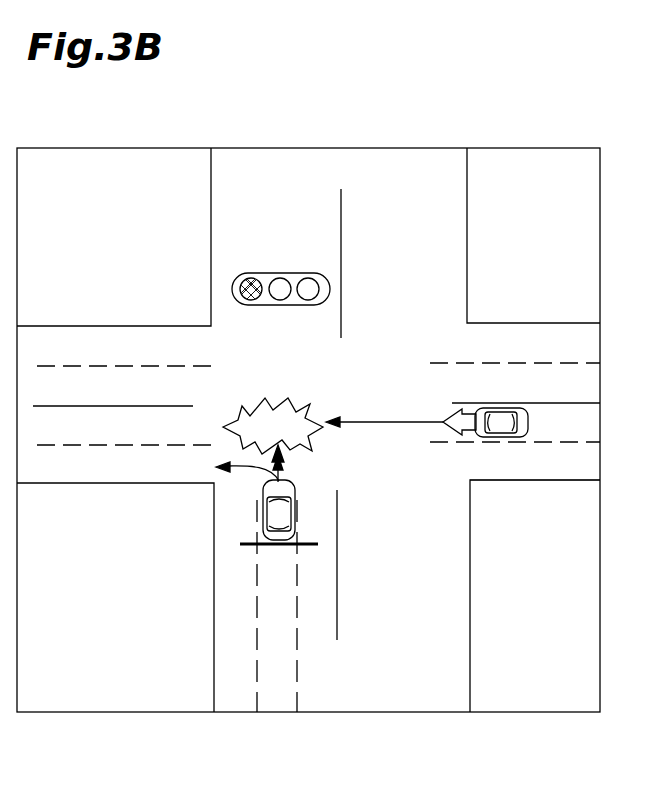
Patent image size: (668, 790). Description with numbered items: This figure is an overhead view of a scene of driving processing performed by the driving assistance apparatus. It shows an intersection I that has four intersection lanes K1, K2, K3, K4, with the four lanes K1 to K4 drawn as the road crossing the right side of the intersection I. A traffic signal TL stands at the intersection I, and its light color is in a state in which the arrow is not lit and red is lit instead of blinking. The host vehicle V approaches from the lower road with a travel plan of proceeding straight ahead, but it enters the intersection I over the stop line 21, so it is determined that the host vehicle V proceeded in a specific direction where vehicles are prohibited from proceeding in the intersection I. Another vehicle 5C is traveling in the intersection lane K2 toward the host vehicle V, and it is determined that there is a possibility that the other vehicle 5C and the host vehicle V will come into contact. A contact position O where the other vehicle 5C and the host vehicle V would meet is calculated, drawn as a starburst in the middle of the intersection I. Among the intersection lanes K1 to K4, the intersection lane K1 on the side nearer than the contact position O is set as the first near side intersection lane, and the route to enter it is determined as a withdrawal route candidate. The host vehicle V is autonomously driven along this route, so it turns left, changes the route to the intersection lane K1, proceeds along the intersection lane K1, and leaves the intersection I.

The intersection I is at (188, 279).
The traffic signal TL is at (330, 272).
The contact position O is at (255, 420).
The host vehicle V is at (270, 518).
The stop line 21 is at (248, 548).
The other vehicle 5C is at (504, 438).
The intersection lane K1 is at (590, 464).
The intersection lane K2 is at (590, 424).
The intersection lane K3 is at (590, 384).
The intersection lane K4 is at (590, 346).